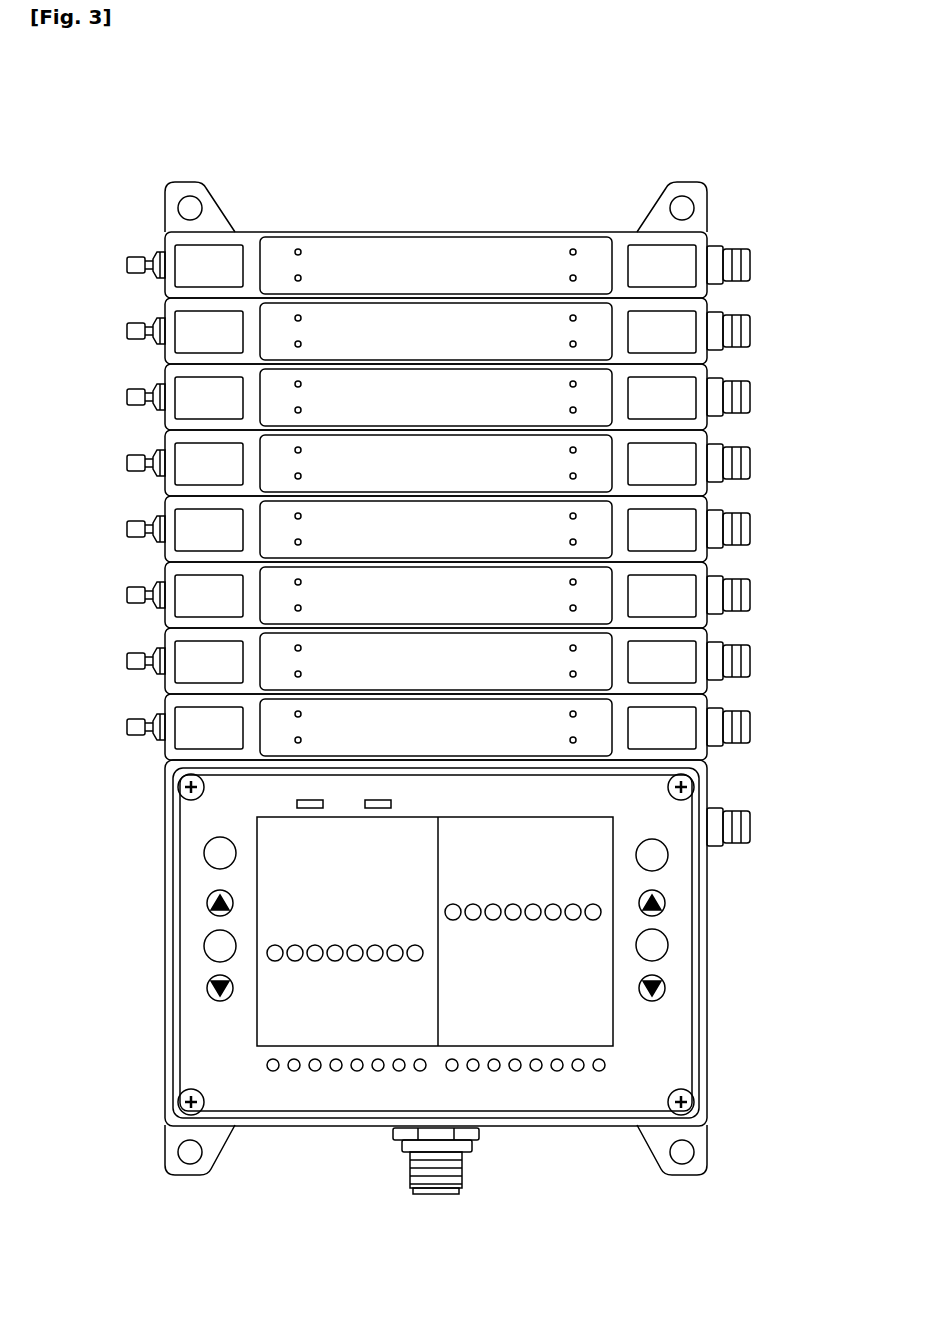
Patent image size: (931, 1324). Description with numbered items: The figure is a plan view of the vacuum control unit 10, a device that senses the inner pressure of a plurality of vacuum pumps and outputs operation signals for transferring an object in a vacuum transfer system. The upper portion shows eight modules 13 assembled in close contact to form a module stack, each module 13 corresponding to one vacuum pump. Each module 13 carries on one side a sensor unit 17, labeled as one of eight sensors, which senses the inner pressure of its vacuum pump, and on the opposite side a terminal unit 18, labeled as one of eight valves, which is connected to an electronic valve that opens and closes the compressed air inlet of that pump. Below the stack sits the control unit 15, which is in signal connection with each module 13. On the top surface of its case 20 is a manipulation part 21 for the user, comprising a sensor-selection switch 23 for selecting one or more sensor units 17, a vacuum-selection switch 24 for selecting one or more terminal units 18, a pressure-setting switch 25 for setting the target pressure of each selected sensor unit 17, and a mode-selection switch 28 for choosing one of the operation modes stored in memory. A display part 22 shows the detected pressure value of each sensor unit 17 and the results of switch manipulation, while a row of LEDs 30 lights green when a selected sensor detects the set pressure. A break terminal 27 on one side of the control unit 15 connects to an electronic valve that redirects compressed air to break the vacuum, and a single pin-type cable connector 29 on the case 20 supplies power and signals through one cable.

The vacuum control unit 10 is at (546, 136).
The module 13 is at (432, 333).
The control unit 15 is at (712, 915).
The sensor unit 17 is at (127, 333).
The terminal unit 18 is at (752, 399).
The case 20 is at (707, 1017).
The manipulation part 21 is at (218, 1010).
The display part 22 is at (293, 992).
The sensor-selection switch 23 is at (204, 946).
The vacuum-selection switch 24 is at (669, 945).
The pressure-setting switch 25 is at (207, 902).
The break terminal 27 is at (750, 827).
The mode-selection switch 28 is at (203, 853).
The pin-type cable connector 29 is at (436, 1193).
The LED 30 is at (610, 1073).